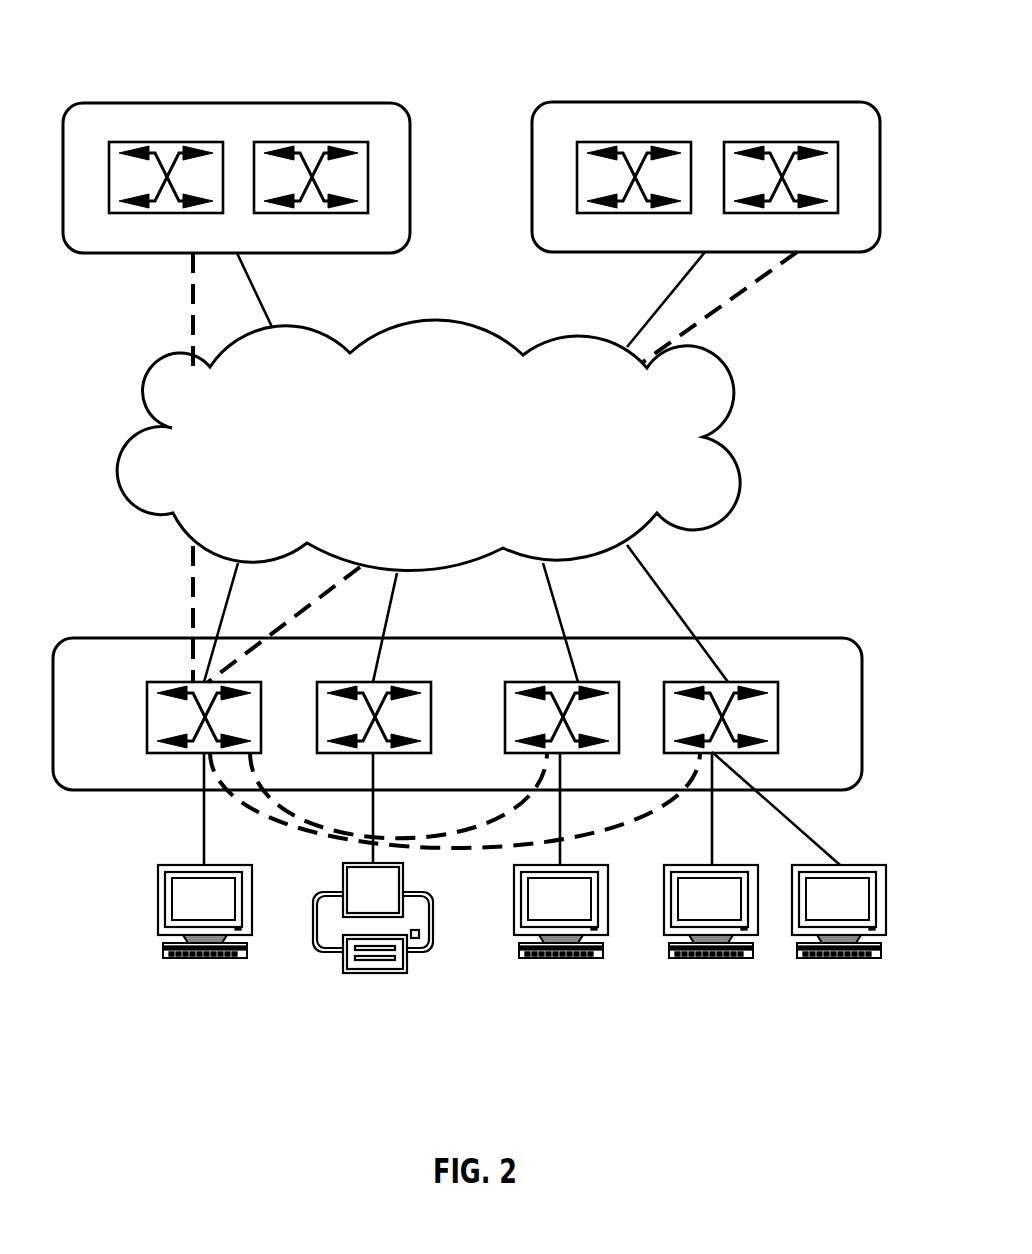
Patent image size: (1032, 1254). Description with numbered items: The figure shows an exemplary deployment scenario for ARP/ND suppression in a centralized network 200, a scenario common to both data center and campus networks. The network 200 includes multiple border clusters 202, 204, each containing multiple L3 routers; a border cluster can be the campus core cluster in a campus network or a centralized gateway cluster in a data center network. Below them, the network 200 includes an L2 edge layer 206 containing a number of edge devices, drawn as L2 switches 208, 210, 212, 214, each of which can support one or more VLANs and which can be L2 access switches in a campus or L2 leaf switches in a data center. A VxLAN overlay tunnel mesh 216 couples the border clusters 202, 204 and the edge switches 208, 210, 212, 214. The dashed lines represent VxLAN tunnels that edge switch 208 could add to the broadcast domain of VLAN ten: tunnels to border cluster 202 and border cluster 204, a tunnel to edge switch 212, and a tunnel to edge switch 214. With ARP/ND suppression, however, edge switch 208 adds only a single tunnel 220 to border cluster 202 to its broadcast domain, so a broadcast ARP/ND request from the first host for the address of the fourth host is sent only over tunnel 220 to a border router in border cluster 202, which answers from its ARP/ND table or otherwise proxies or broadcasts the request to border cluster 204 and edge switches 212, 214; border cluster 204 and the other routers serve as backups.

The network 200 is at (462, 1107).
The border cluster 202 is at (238, 104).
The border cluster 204 is at (708, 103).
The L2 edge layer 206 is at (778, 638).
The edge switch 208 is at (147, 722).
The edge switch 210 is at (317, 712).
The edge switch 212 is at (505, 712).
The edge switch 214 is at (664, 722).
The VxLAN overlay tunnel mesh 216 is at (416, 469).
The tunnel 220 is at (183, 271).